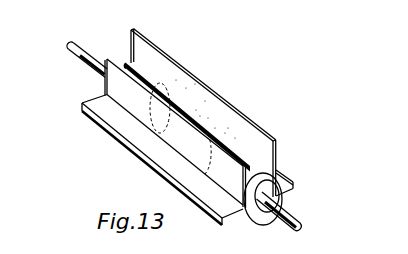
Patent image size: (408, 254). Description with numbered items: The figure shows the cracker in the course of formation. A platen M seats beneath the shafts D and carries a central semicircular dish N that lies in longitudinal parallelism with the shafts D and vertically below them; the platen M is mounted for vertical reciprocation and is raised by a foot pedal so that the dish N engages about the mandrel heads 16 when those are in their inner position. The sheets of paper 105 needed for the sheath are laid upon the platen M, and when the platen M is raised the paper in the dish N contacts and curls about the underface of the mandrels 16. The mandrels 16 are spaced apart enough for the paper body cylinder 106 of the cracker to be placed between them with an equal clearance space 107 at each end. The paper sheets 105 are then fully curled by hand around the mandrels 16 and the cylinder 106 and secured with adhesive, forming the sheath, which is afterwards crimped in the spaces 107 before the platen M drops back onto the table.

The sheets of paper 105 is at (274, 141).
The mandrels 16 is at (152, 82).
The clearance space 107 is at (188, 90).
The paper body cylinder 106 is at (202, 113).
The shafts D is at (88, 63).
The platen M is at (124, 127).
The central semicircular dish N is at (247, 222).